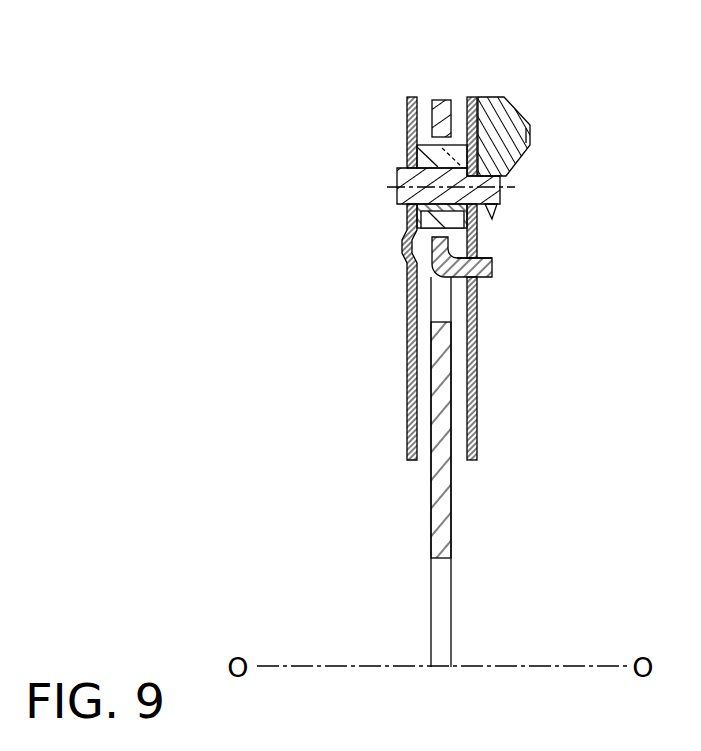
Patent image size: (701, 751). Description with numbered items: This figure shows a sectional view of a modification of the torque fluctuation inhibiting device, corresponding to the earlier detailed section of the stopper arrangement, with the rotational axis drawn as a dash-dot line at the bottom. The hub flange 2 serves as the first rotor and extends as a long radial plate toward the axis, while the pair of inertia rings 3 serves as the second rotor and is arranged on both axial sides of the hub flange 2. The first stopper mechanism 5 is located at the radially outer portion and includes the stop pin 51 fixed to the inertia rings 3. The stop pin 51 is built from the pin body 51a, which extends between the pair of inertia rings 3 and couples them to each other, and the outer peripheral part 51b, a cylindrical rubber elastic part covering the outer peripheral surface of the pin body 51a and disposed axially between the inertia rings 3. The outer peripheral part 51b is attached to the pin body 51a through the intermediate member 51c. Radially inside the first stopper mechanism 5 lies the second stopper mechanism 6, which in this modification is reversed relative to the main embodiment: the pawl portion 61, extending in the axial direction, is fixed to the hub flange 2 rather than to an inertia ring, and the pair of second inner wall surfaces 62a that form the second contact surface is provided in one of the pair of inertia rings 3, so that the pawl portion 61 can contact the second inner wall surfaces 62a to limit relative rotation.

The hub flange 2 is at (451, 492).
The inertia rings 3 is at (485, 97).
The first stopper mechanism 5 is at (372, 156).
The stop pin 51 is at (418, 143).
The pin body 51a is at (398, 182).
The outer peripheral part 51b is at (404, 238).
The intermediate member 51c is at (405, 213).
The second stopper mechanism 6 is at (504, 266).
The pawl portion 61 is at (490, 278).
The second inner wall surfaces 62a is at (480, 252).